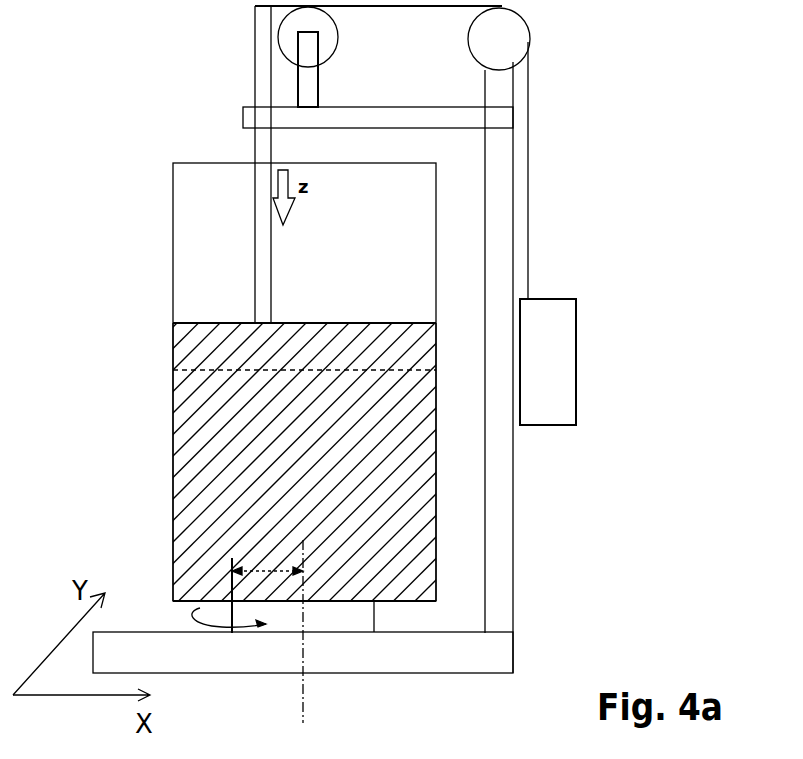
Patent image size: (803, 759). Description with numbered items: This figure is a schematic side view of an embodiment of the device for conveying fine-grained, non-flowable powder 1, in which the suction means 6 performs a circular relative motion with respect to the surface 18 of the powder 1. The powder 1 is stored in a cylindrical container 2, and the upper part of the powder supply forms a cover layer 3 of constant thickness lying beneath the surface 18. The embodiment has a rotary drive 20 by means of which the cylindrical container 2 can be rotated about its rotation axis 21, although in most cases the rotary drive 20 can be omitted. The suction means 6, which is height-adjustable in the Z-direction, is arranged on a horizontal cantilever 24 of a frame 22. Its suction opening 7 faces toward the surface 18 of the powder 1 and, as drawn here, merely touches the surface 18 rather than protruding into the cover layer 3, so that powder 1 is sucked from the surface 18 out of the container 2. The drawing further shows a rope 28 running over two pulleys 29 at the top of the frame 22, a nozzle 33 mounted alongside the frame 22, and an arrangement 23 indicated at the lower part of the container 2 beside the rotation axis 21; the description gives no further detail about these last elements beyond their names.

The powder 1 is at (415, 558).
The container 2 is at (173, 512).
The cover layer 3 is at (197, 352).
The suction means 6 is at (262, 203).
The suction opening 7 is at (257, 332).
The surface 18 is at (365, 322).
The rotary drive 20 is at (348, 618).
The rotation axis 21 is at (303, 712).
The frame 22 is at (498, 539).
The arrangement 23 is at (267, 568).
The cantilever 24 is at (462, 120).
The rope 28 is at (437, 8).
The pulley 29 is at (322, 41).
The nozzle 33 is at (560, 367).